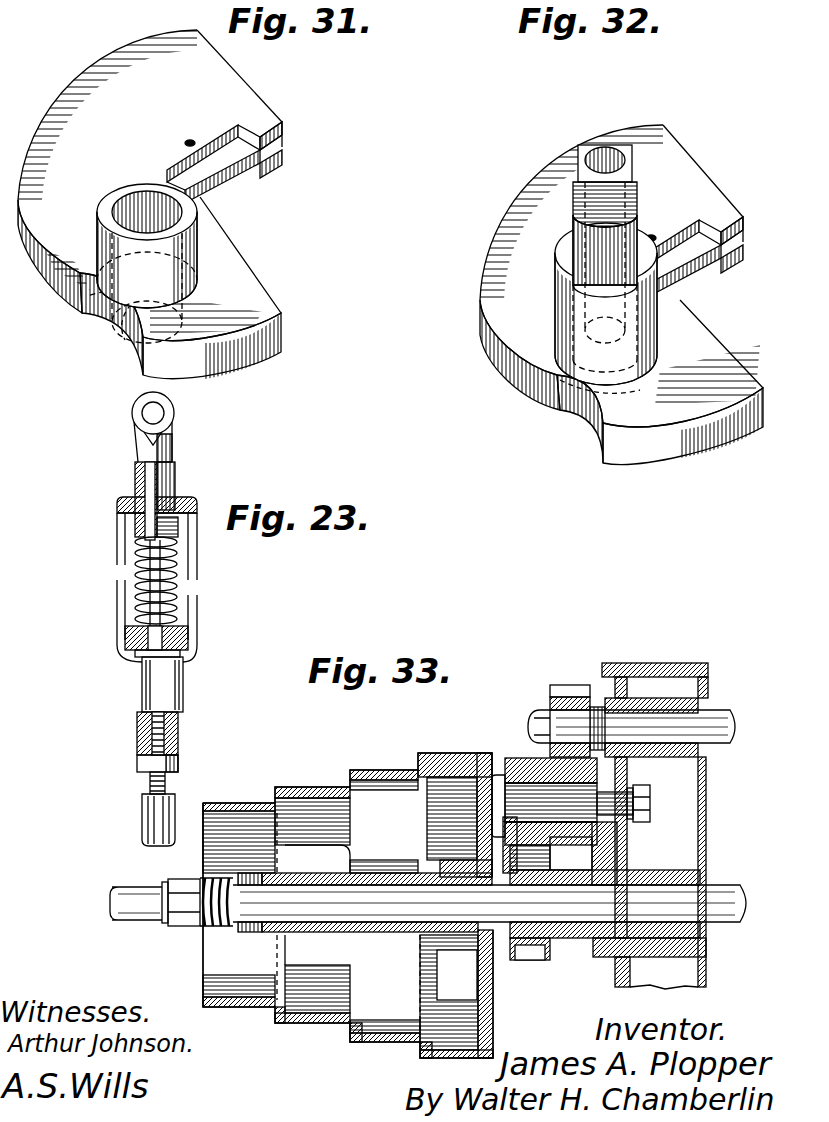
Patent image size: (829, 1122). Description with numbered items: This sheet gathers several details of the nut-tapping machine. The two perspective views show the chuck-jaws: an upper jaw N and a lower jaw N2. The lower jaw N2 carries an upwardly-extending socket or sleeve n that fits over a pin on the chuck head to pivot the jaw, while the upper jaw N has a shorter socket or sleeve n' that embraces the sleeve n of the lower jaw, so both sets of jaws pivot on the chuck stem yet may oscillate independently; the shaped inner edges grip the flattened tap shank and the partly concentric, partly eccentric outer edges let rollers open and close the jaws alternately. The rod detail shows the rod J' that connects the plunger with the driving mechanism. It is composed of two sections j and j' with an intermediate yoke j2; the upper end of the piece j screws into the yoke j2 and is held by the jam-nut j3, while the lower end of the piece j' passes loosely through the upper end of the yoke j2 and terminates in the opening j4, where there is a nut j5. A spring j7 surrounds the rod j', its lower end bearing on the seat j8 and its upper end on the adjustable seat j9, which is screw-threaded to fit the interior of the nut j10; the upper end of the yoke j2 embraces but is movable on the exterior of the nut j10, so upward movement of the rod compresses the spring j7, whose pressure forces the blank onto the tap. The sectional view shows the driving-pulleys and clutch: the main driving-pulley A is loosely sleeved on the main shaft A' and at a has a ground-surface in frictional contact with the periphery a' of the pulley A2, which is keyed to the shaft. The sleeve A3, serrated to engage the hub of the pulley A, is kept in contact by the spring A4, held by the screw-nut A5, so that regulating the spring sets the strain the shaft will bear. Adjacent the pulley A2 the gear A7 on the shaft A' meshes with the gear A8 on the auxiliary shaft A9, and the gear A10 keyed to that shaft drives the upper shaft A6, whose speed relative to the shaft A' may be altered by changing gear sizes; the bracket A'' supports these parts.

In FIG. 31, the upper chuck jaw N is at (150, 204).
In FIG. 31, the shorter socket or sleeve n' is at (132, 263).
In FIG. 32, the lower chuck jaw N2 is at (621, 294).
In FIG. 32, the upwardly-extending socket or sleeve n is at (598, 265).
In FIG. 23, the upper rod section j' is at (162, 427).
In FIG. 23, the nut j10 is at (135, 485).
In FIG. 23, the adjustable seat j9 is at (178, 533).
In FIG. 23, the spring j7 is at (140, 590).
In FIG. 23, the intermediate yoke j2 is at (197, 608).
In FIG. 23, the seat j8 is at (125, 632).
In FIG. 23, the nut j5 is at (135, 653).
In FIG. 23, the opening j4 is at (162, 684).
In FIG. 23, the jam-nut j3 is at (137, 764).
In FIG. 23, the rod J' is at (173, 788).
In FIG. 23, the lower rod section j is at (142, 818).
In FIG. 33, the periphery a' is at (455, 884).
In FIG. 33, the ground-surface a is at (471, 1071).
In FIG. 33, the main driving-pulley A is at (348, 905).
In FIG. 33, the pulley A2 is at (495, 1005).
In FIG. 33, the main shaft A' is at (431, 883).
In FIG. 33, the screw-nut A5 is at (186, 926).
In FIG. 33, the spring A4 is at (222, 926).
In FIG. 33, the sleeve A3 is at (262, 930).
In FIG. 33, the gear A8 is at (513, 755).
In FIG. 33, the auxiliary shaft A9 is at (580, 810).
In FIG. 33, the gear A7 is at (542, 960).
In FIG. 33, the gear A10 is at (628, 838).
In FIG. 33, the bracket A'' is at (618, 696).
In FIG. 33, the upper shaft A6 is at (735, 714).